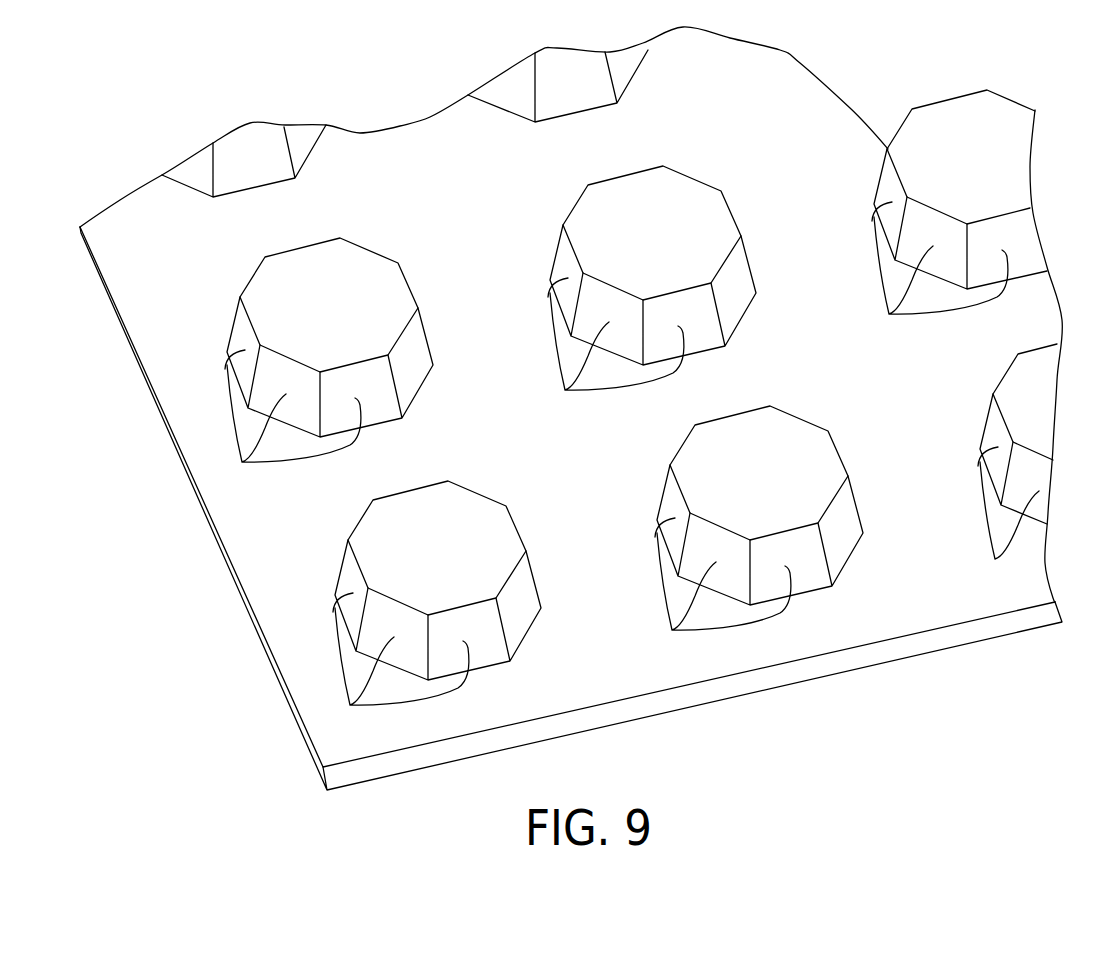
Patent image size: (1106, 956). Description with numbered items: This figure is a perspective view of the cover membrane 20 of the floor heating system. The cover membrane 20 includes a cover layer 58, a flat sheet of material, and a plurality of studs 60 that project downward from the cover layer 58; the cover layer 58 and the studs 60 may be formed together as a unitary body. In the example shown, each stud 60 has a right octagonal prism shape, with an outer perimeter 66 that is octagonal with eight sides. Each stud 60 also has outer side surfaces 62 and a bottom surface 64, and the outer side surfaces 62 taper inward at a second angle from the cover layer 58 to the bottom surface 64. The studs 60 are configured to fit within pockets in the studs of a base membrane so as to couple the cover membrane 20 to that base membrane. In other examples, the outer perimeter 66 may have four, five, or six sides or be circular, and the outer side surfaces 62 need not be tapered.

The cover membrane 20 is at (571, 408).
The cover layer 58 is at (897, 596).
The stud 60 is at (287, 242).
The outer side surface 62 is at (242, 462).
The bottom surface 64 is at (343, 315).
The outer perimeter 66 is at (250, 322).